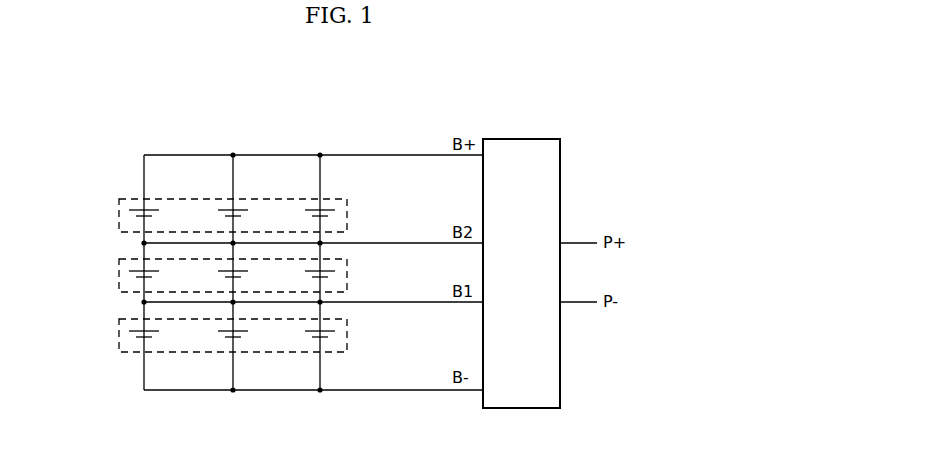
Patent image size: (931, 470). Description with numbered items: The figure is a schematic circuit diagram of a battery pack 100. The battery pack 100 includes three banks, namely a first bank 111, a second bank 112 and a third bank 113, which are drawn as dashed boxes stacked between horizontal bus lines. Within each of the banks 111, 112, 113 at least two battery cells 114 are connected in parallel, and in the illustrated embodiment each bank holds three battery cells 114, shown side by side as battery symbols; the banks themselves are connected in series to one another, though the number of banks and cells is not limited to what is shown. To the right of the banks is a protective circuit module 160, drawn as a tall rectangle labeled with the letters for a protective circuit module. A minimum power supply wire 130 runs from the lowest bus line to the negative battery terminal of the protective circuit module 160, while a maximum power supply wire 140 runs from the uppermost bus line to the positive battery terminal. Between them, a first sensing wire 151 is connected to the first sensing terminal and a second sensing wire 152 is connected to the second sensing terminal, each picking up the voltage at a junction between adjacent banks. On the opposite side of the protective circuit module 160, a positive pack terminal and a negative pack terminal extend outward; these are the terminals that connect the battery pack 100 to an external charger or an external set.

The battery pack 100 is at (532, 112).
The first bank 111 is at (118, 333).
The second bank 112 is at (118, 275).
The third bank 113 is at (189, 198).
The battery cells 114 is at (230, 207).
The minimum power supply wire 130 is at (370, 390).
The maximum power supply wire 140 is at (370, 155).
The first sensing wire 151 is at (370, 302).
The second sensing wire 152 is at (370, 243).
The protective circuit module 160 is at (561, 155).